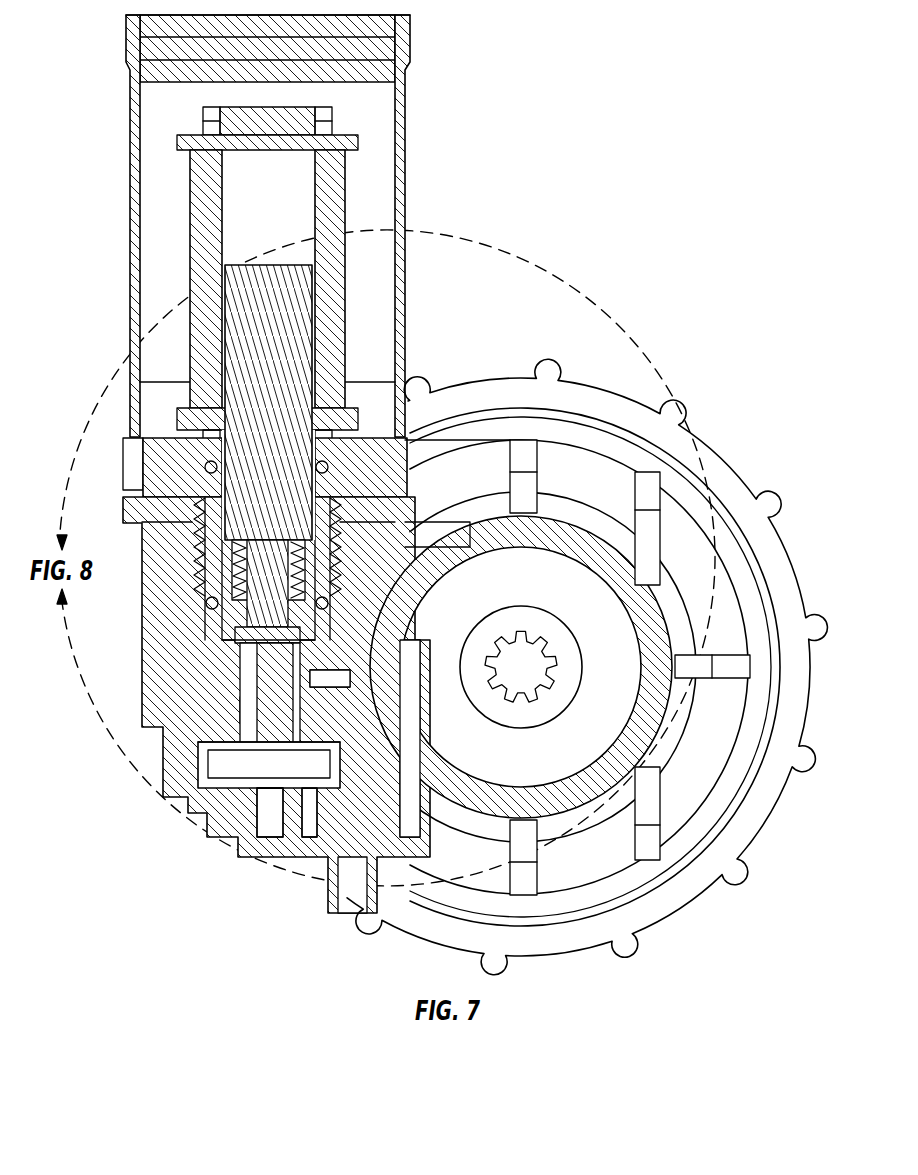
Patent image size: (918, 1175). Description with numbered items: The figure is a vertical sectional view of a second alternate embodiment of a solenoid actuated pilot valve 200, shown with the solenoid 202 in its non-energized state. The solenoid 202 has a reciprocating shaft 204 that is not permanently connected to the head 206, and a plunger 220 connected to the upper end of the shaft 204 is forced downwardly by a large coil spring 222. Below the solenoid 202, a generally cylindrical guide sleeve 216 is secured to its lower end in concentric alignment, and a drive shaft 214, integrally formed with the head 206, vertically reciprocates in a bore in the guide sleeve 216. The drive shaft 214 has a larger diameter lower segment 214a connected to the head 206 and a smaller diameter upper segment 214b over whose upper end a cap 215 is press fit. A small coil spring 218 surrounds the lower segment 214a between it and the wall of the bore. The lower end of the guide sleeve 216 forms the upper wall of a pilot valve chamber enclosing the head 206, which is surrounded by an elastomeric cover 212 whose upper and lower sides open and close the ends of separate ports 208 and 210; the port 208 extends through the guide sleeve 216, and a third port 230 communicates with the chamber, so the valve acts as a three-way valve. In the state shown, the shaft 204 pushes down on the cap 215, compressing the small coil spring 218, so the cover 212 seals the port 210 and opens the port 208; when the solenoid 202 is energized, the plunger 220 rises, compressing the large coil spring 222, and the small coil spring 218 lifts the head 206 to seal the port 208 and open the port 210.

The second alternate embodiment of solenoid actuated pilot valve 200 is at (101, 322).
The solenoid 202 is at (345, 219).
The reciprocating shaft 204 is at (267, 573).
The head 206 is at (243, 772).
The port 208 is at (312, 717).
The port 210 is at (267, 792).
The elastomeric cover 212 is at (243, 778).
The drive shaft 214 is at (240, 731).
The lower segment of drive shaft 214a is at (262, 748).
The upper segment of drive shaft 214b is at (290, 665).
The cap 215 is at (240, 690).
The guide sleeve 216 is at (217, 660).
The small coil spring 218 is at (247, 710).
The plunger 220 is at (285, 322).
The large coil spring 222 is at (235, 548).
The third port 230 is at (310, 808).